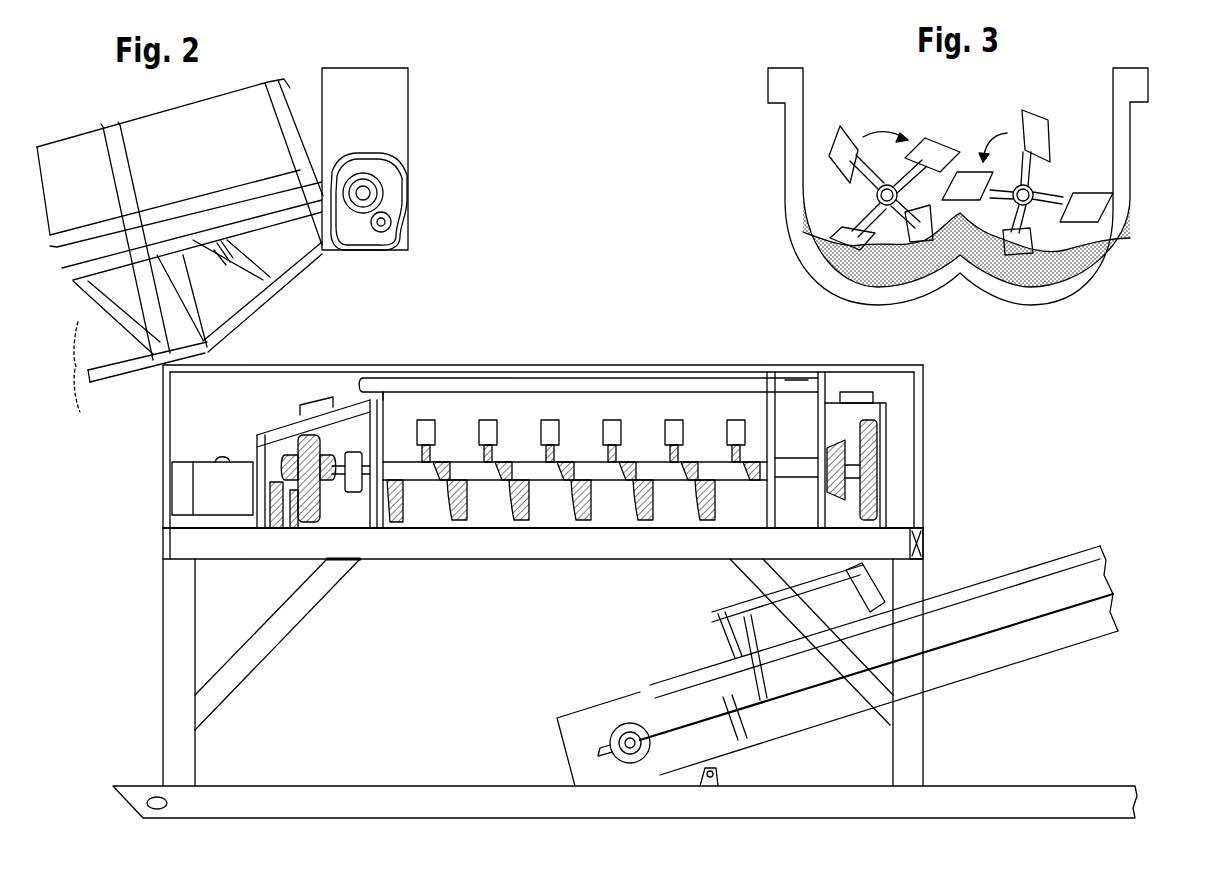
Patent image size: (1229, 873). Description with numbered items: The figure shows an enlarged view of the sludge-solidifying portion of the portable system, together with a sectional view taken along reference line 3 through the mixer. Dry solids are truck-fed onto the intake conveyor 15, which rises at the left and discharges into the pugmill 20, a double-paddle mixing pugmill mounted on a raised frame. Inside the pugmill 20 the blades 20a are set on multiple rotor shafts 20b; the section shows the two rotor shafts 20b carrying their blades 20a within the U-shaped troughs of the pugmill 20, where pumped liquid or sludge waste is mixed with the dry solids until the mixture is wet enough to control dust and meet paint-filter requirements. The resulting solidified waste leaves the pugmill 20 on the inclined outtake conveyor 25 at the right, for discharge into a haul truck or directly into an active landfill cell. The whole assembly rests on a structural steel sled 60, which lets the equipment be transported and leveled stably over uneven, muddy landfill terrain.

In FIG. 2, the intake conveyor 15 is at (284, 86).
In FIG. 2, the pugmill 20 is at (930, 402).
In FIG. 3, the pugmill 20 is at (1146, 146).
In FIG. 2, the blades 20a is at (740, 417).
In FIG. 3, the blades 20a is at (833, 168).
In FIG. 2, the rotor shafts 20b is at (790, 463).
In FIG. 3, the rotor shafts 20b is at (870, 197).
In FIG. 2, the outtake conveyor 25 is at (1050, 557).
In FIG. 2, the structural steel sleds 60 is at (448, 786).
In FIG. 2, the reference line 3/ 3 is at (592, 587).